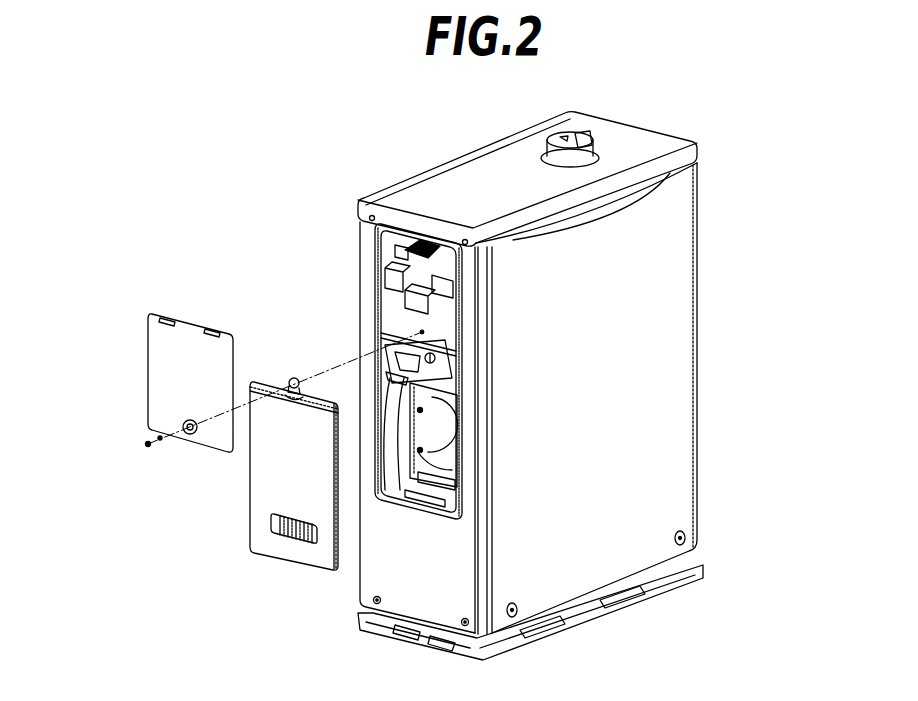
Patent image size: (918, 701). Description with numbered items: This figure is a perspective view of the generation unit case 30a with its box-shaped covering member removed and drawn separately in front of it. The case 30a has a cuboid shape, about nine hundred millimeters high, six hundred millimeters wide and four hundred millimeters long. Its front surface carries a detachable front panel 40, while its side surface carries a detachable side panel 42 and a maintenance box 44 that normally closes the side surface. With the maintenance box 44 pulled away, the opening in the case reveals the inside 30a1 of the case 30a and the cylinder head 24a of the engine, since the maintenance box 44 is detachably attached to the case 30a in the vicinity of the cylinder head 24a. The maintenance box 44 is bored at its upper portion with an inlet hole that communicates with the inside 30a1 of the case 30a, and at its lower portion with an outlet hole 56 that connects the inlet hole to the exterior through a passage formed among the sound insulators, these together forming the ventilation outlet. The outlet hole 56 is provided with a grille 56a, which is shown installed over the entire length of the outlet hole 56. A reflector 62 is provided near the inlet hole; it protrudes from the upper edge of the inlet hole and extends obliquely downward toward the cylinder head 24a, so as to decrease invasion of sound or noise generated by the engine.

The front panel 40 is at (652, 363).
The case 30a is at (437, 166).
The inside of the case 30a1 is at (428, 352).
The cylinder head 24a is at (440, 430).
The side panel 42 is at (163, 382).
The maintenance box 44 is at (265, 490).
The reflector 62 is at (341, 424).
The outlet hole 56 is at (269, 567).
The grille 56a is at (282, 540).